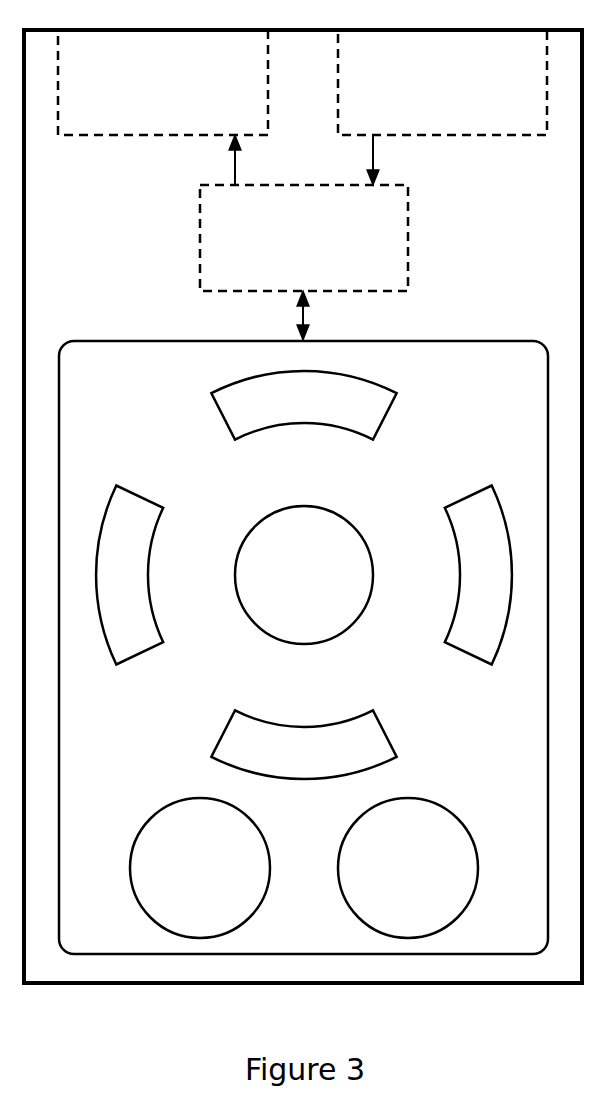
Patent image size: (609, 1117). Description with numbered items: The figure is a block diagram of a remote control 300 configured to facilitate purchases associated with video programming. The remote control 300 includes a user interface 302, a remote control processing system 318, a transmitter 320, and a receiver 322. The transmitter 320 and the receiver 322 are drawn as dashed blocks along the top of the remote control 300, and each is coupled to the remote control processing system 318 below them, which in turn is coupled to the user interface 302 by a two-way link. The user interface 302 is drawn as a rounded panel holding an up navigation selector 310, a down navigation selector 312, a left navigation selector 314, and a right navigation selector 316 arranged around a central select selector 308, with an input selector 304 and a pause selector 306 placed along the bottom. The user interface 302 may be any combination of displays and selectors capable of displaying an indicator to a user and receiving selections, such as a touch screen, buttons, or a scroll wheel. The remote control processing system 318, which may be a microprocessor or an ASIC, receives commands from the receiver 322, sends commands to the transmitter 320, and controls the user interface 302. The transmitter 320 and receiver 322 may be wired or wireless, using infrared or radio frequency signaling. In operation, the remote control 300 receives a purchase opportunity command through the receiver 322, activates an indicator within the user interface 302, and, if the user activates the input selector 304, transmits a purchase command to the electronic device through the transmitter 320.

The remote control 300 is at (509, 248).
The user interface 302 is at (473, 386).
The input selector 304 is at (180, 931).
The pause selector 306 is at (388, 931).
The select selector 308 is at (284, 620).
The up navigation selector 310 is at (284, 407).
The down navigation selector 312 is at (284, 764).
The left navigation selector 314 is at (102, 587).
The right navigation selector 316 is at (466, 587).
The remote control processing system 318 is at (283, 249).
The transmitter 320 is at (143, 94).
The receiver 322 is at (422, 94).